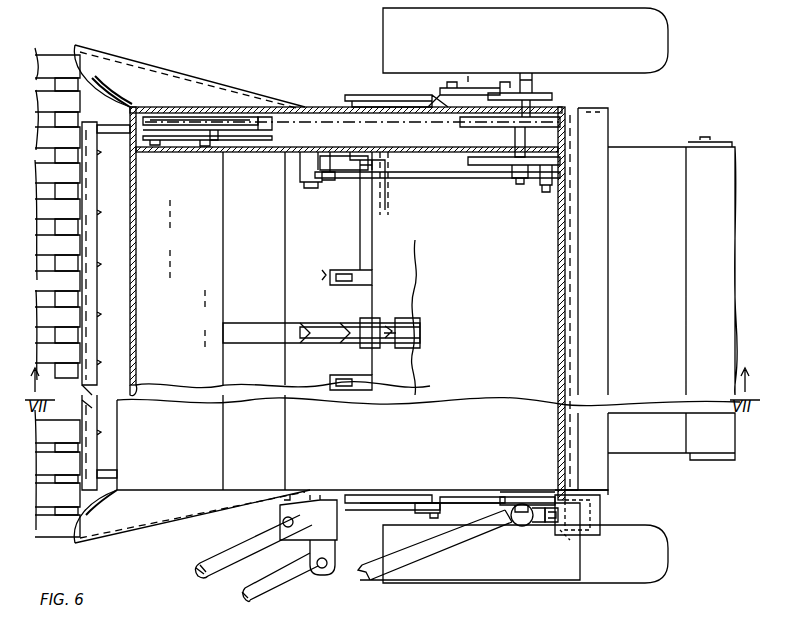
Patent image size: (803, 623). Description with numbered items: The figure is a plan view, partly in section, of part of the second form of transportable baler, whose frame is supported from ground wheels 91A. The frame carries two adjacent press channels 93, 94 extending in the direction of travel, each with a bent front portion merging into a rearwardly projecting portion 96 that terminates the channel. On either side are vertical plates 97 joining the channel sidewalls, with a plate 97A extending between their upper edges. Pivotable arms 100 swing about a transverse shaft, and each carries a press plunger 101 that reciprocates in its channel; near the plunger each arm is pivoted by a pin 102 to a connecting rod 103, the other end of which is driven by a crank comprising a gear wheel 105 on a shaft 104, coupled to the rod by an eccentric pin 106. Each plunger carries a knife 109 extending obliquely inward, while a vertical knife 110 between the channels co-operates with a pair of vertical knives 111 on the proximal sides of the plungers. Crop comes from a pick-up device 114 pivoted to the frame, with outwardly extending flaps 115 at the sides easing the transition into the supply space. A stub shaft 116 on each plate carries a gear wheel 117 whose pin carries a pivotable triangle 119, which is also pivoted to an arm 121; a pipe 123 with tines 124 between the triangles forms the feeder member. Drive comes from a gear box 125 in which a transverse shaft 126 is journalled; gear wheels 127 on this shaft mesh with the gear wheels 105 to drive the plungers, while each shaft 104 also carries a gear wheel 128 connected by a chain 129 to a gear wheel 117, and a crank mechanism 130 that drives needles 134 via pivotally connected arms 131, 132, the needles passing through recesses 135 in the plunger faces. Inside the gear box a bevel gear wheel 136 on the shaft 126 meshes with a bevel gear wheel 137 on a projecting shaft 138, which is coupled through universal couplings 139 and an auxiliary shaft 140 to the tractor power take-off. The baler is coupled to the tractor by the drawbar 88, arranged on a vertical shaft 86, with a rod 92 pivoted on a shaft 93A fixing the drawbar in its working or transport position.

The vertical shaft 86 is at (294, 522).
The drawbar 88 is at (204, 560).
The ground wheels 91A is at (668, 40).
The rod 92 is at (280, 590).
The press channel 93 is at (417, 268).
The shaft 93A is at (326, 576).
The press channel 94 is at (418, 372).
The rearwardly projecting portion 96 is at (648, 447).
The vertical plates 97 is at (330, 90).
The plate 97A is at (195, 408).
The pivotable arms 100 is at (346, 155).
The press plunger 101 is at (232, 352).
The pin 102 is at (304, 182).
The connecting rod 103 is at (426, 178).
The shaft 104 is at (514, 182).
The gear wheel 105 is at (466, 160).
The pin 106 is at (542, 192).
The knife 109 is at (378, 245).
The vertical knife 110 is at (340, 338).
The vertical knives 111 is at (386, 343).
The pick-up device 114 is at (68, 64).
The flaps 115 is at (142, 62).
The stub shaft 116 is at (196, 108).
The gear wheel 117 is at (240, 112).
The triangle 119 is at (124, 126).
The arm 121 is at (240, 140).
The pipe 123 is at (95, 197).
The tines 124 is at (100, 262).
The gear box 125 is at (596, 538).
The shaft 126 is at (566, 410).
The gear wheels 127 is at (590, 158).
The gear wheel 128 is at (466, 126).
The chain 129 is at (358, 122).
The crank mechanism 130 is at (556, 96).
The arm 131 is at (478, 76).
The arm 132 is at (378, 94).
The needles 134 is at (334, 222).
The recesses 135 is at (372, 280).
The bevel gear wheel 136 is at (592, 505).
The bevel gear wheel 137 is at (570, 540).
The shaft 138 is at (548, 530).
The universal couplings 139 is at (514, 526).
The auxiliary shaft 140 is at (418, 557).